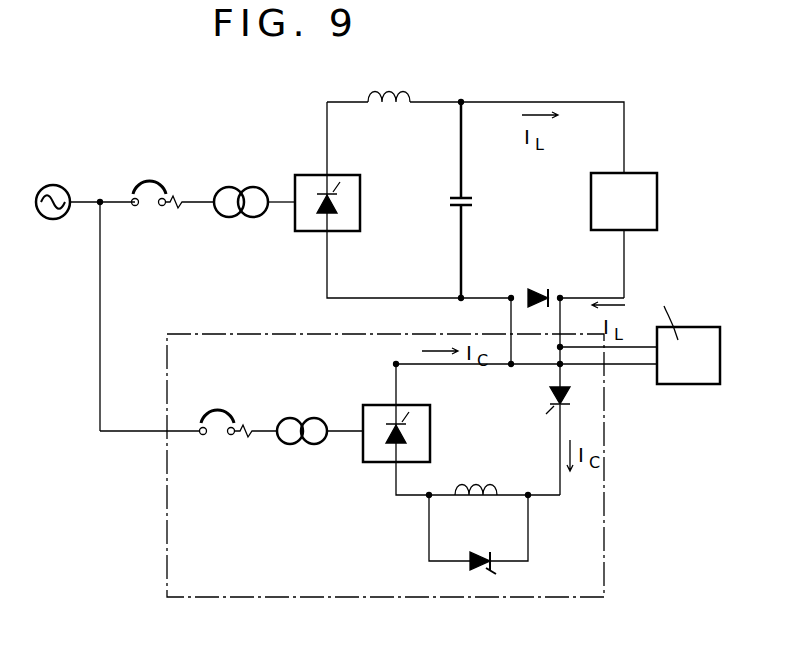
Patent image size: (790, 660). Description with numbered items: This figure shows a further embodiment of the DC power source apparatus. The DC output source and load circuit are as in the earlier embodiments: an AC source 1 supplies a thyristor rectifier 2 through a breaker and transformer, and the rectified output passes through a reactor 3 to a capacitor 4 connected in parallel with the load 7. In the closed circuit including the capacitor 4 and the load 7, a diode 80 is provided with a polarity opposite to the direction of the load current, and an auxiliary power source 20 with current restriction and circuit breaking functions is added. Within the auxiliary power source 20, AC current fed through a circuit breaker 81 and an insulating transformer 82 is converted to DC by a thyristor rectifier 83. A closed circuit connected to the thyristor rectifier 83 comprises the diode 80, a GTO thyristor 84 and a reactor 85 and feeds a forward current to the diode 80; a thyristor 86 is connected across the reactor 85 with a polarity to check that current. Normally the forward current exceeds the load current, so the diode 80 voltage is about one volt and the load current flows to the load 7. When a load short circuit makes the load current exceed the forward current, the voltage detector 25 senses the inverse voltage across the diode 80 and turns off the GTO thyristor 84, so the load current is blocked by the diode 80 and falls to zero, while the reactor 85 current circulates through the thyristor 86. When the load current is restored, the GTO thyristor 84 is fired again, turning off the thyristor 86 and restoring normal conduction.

The AC power source 1 is at (57, 219).
The thyristor rectifier 2 is at (343, 231).
The reactor 3 is at (386, 108).
The capacitor 4 is at (442, 210).
The load 7 is at (592, 206).
The auxiliary power source 20 is at (605, 548).
The voltage detector 25 is at (684, 384).
The diode 80 is at (535, 280).
The circuit breaker 81 is at (218, 436).
The insulating transformer 82 is at (303, 444).
The thyristor rectifier 83 is at (430, 416).
The GTO thyristor 84 is at (548, 400).
The reactor 85 is at (478, 488).
The thyristor 86 is at (478, 556).